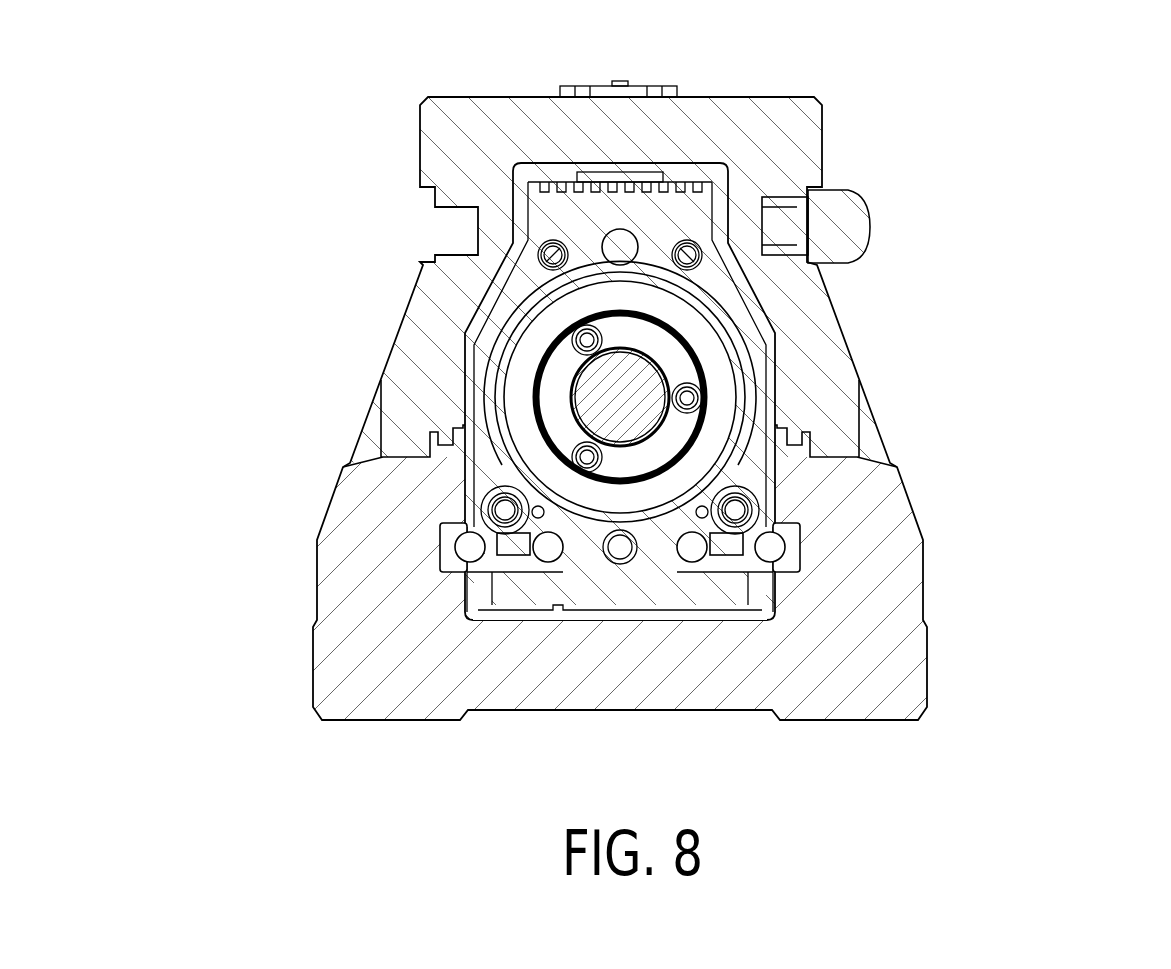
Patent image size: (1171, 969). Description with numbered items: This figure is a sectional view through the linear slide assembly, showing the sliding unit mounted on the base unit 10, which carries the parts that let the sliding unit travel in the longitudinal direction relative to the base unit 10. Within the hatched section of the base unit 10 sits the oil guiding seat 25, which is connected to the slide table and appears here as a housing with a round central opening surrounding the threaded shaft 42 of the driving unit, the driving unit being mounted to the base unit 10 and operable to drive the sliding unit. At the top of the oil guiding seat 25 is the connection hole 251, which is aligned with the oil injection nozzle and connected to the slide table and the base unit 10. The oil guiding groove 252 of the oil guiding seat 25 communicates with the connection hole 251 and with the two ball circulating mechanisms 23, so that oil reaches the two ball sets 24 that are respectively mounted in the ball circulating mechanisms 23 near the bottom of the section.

The base unit 10 is at (938, 675).
The ball circulating mechanism 23 is at (528, 551).
The ball set 24 is at (774, 549).
The oil guiding seat 25 is at (736, 305).
The connection hole 251 is at (627, 246).
The oil guiding groove 252 is at (754, 397).
The threaded shaft 42 is at (613, 397).